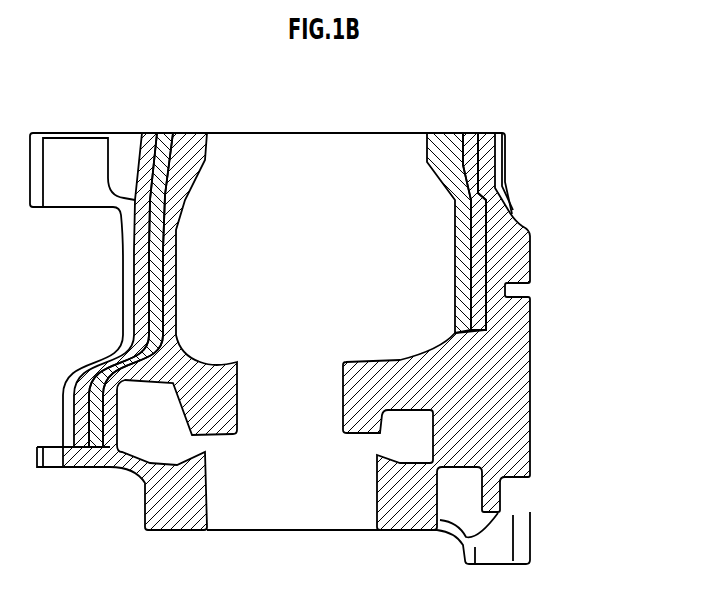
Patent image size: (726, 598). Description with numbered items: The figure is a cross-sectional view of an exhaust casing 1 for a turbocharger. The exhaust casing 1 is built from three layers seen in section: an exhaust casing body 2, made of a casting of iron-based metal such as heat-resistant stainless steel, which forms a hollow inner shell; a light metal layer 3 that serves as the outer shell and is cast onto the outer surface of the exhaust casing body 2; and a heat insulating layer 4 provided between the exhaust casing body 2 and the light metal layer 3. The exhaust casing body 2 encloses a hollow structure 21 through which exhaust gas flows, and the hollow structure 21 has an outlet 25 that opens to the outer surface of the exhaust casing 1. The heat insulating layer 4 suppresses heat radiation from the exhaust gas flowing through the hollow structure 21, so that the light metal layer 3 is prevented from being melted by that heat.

The exhaust casing 1 is at (546, 118).
The exhaust casing body 2 is at (529, 380).
The light metal layer 3 is at (516, 230).
The heat insulating layer 4 is at (482, 242).
The hollow structure 21 is at (297, 213).
The outlet 25 is at (233, 133).